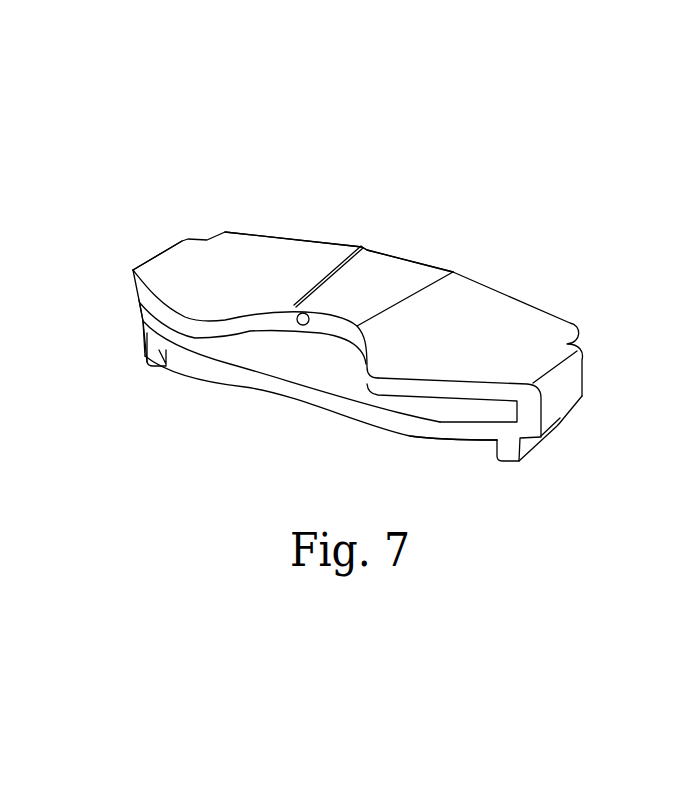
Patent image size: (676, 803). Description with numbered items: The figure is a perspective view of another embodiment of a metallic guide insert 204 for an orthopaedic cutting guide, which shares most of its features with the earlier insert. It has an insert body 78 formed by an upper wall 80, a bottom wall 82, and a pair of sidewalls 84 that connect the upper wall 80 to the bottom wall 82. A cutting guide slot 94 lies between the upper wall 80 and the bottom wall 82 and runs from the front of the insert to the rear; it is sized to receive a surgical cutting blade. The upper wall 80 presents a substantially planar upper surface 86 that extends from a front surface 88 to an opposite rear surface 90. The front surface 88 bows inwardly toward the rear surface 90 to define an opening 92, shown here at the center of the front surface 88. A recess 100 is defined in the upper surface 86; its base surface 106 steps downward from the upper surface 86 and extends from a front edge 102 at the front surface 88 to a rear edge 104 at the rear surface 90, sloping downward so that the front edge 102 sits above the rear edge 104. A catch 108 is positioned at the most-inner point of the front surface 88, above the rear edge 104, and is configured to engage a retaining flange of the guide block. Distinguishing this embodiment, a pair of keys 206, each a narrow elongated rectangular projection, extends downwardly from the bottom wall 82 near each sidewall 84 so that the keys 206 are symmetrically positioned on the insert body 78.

The metallic guide insert 204 is at (532, 148).
The insert body 78 is at (221, 258).
The upper surface 86 is at (168, 262).
The rear surface 90 is at (493, 281).
The recess 100 is at (361, 282).
The catch 108 is at (330, 313).
The base surface 106 is at (400, 262).
The rear edge 104 is at (419, 259).
The front edge 102 is at (293, 309).
The front surface 88 is at (460, 394).
The upper wall 80 is at (158, 327).
The keys 206 is at (152, 367).
The opening 92 is at (300, 362).
The cutting guide slot 94 is at (429, 420).
The bottom wall 82 is at (469, 446).
The sidewalls 84 is at (545, 404).